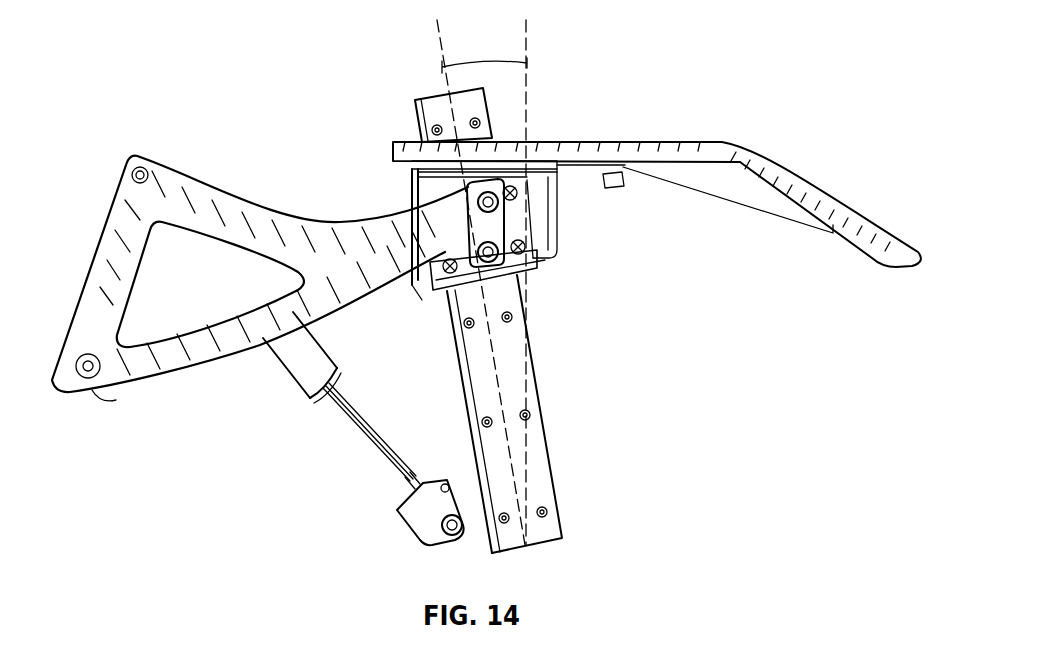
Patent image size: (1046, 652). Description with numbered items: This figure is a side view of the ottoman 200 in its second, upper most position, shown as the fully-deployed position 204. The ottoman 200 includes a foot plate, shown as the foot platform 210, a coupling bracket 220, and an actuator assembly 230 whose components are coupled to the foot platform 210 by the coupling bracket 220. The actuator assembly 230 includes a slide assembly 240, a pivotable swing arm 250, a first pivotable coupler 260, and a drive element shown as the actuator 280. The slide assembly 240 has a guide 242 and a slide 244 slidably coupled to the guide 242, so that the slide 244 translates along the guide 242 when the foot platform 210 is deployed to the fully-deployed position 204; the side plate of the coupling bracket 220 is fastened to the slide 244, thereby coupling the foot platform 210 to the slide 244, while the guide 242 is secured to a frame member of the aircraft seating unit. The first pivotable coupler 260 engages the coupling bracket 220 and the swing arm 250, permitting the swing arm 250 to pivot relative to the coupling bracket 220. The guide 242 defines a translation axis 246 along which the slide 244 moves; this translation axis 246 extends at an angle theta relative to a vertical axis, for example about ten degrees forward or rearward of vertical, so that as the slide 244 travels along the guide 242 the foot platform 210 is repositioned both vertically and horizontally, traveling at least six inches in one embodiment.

The ottoman 200 is at (135, 75).
The fully-deployed position 204 is at (555, 102).
The foot platform 210 is at (717, 114).
The coupling bracket 220 is at (543, 222).
The actuator assembly 230 is at (248, 388).
The slide assembly 240 is at (456, 416).
The guide 242 is at (480, 362).
The slide 244 is at (438, 298).
The translation axis 246 is at (440, 43).
The swing arm 250 is at (195, 202).
The first pivotable coupler 260 is at (470, 222).
The actuator 280 is at (205, 293).